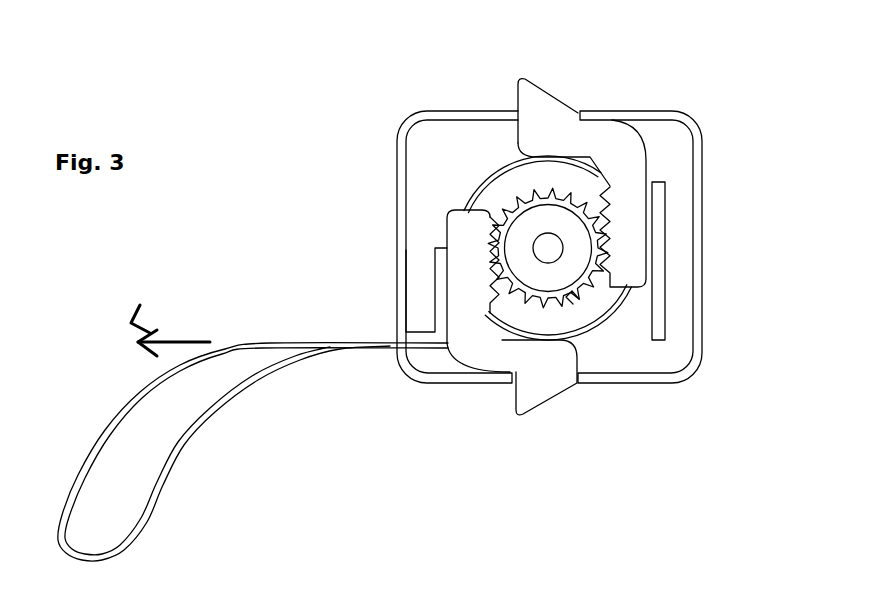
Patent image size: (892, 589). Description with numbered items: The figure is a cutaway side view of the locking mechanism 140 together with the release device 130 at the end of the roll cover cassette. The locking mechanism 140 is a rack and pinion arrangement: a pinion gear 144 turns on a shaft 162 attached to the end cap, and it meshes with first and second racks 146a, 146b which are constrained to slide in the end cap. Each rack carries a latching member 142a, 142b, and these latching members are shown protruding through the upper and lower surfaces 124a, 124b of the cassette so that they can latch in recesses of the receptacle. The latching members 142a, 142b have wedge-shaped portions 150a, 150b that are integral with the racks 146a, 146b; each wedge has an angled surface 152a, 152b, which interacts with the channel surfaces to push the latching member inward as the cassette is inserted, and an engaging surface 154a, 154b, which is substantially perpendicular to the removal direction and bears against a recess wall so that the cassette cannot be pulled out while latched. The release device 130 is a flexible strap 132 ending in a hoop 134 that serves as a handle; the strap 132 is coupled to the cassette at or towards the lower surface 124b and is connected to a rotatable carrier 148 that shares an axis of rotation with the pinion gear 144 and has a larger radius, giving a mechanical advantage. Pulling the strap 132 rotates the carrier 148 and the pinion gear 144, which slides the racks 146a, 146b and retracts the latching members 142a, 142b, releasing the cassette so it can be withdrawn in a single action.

The release device 130 is at (197, 352).
The strap 132 is at (127, 390).
The hoop 134 is at (107, 525).
The locking mechanism 140 is at (657, 383).
The upper surface 124a is at (467, 111).
The lower surface 124b is at (443, 383).
The first latching member 142a is at (550, 118).
The second latching member 142b is at (517, 387).
The pinion gear 144 is at (520, 222).
The first rack 146a is at (645, 235).
The second rack 146b is at (455, 268).
The rotatable carrier 148 is at (513, 178).
The first wedge-shaped portion 150a is at (535, 105).
The second wedge-shaped portion 150b is at (532, 398).
The first angled surface 152a is at (560, 102).
The second angled surface 152b is at (550, 397).
The first engaging surface 154a is at (513, 95).
The second engaging surface 154b is at (512, 408).
The shaft 162 is at (551, 250).